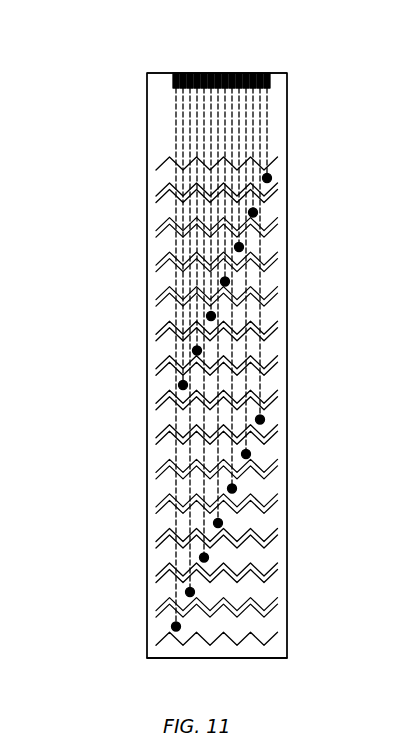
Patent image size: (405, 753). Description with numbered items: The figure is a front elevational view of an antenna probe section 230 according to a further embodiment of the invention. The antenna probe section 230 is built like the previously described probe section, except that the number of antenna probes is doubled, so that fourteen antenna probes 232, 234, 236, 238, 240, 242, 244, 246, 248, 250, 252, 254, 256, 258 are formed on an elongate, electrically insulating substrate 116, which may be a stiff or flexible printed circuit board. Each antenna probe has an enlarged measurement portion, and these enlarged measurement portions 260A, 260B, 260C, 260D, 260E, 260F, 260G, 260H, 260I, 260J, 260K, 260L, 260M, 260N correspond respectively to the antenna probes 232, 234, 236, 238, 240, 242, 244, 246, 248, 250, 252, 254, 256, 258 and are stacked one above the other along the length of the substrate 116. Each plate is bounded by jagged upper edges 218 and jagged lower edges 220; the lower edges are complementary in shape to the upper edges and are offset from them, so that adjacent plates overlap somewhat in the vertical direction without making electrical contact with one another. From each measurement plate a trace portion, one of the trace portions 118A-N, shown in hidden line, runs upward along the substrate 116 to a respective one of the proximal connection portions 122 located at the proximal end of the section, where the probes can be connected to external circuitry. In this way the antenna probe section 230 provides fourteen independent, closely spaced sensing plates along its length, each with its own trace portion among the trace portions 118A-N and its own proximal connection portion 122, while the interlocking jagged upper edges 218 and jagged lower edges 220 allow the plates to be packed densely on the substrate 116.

The antenna probe section 230 is at (108, 90).
The proximal connection portions 122 is at (247, 73).
The trace portions 118A-N is at (283, 113).
The jagged lower edges 220 is at (153, 162).
The substrate 116 is at (276, 655).
The jagged upper edges 218 is at (163, 652).
The enlarged measurement portion 260A is at (155, 635).
The enlarged measurement portion 260B is at (155, 601).
The enlarged measurement portion 260C is at (155, 566).
The enlarged measurement portion 260D is at (155, 532).
The enlarged measurement portion 260E is at (155, 497).
The enlarged measurement portion 260F is at (155, 462).
The enlarged measurement portion 260G is at (155, 428).
The enlarged measurement portion 260H is at (155, 393).
The enlarged measurement portion 260I is at (155, 359).
The enlarged measurement portion 260J is at (155, 324).
The enlarged measurement portion 260K is at (155, 290).
The enlarged measurement portion 260L is at (155, 255).
The enlarged measurement portion 260M is at (155, 221).
The enlarged measurement portion 260N is at (155, 186).
The antenna probe 232 is at (287, 618).
The antenna probe 234 is at (287, 584).
The antenna probe 236 is at (287, 550).
The antenna probe 238 is at (287, 515).
The antenna probe 240 is at (287, 480).
The antenna probe 242 is at (287, 446).
The antenna probe 244 is at (287, 412).
The antenna probe 246 is at (287, 377).
The antenna probe 248 is at (287, 342).
The antenna probe 250 is at (287, 308).
The antenna probe 252 is at (287, 274).
The antenna probe 254 is at (287, 239).
The antenna probe 256 is at (287, 204).
The antenna probe 258 is at (287, 170).